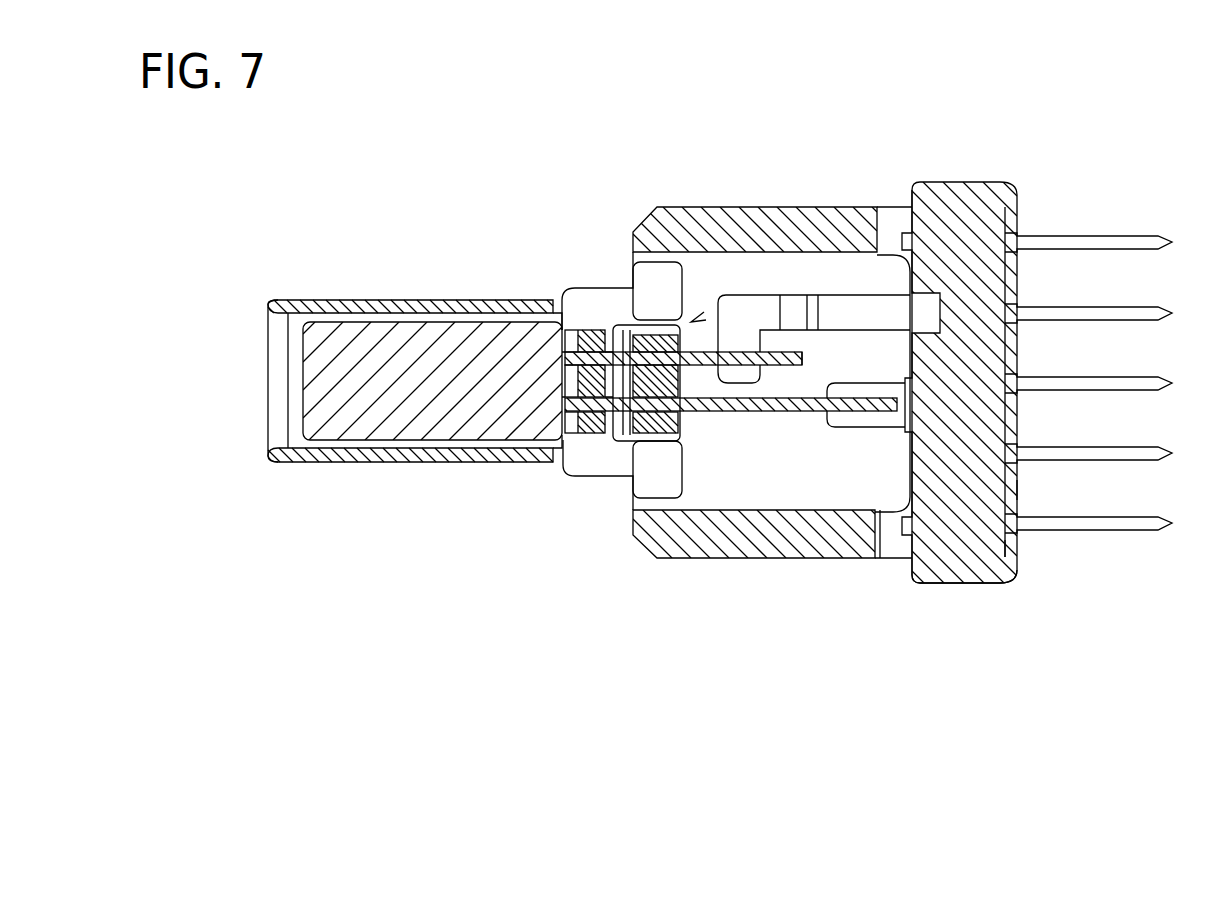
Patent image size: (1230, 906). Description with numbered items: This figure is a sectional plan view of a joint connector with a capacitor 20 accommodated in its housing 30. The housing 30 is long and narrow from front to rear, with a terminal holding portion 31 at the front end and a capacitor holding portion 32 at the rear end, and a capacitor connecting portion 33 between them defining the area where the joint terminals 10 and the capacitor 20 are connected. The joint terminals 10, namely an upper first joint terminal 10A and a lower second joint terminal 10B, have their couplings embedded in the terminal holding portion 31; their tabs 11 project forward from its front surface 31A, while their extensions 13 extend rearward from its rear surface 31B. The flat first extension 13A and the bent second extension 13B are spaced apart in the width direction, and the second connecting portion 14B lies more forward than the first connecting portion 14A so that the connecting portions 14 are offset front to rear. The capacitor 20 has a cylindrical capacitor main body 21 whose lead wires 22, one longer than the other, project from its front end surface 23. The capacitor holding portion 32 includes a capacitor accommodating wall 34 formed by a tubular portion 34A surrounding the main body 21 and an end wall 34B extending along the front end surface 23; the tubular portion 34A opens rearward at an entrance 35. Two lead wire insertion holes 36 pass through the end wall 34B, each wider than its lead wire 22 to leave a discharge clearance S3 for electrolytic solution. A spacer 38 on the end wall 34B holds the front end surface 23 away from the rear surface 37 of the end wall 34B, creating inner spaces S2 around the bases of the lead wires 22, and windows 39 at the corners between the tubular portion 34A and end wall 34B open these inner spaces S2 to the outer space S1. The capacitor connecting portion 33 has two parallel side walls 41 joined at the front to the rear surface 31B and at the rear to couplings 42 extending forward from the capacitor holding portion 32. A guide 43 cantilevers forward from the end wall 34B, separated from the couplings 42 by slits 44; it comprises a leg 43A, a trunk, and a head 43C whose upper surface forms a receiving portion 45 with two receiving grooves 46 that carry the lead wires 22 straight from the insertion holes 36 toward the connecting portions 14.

The joint terminal 10 is at (1050, 100).
The first joint terminal 10A is at (913, 278).
The second joint terminal 10B is at (928, 312).
The tab 11 is at (1142, 452).
The extension 13 is at (920, 642).
The first extension 13A is at (858, 424).
The second extension 13B is at (906, 386).
The connecting portion 14 is at (912, 88).
The first connecting portion 14A is at (850, 392).
The second connecting portion 14B is at (753, 345).
The capacitor 20 is at (340, 335).
The capacitor main body 21 is at (378, 330).
The lead wire 22 is at (840, 410).
The front end surface 23 is at (622, 338).
The housing 30 is at (983, 575).
The terminal holding portion 31 is at (950, 577).
The front surface 31A is at (1018, 488).
The rear surface 31B is at (1018, 548).
The capacitor holding portion 32 is at (430, 305).
The capacitor connecting portion 33 is at (768, 215).
The capacitor accommodating wall 34 is at (482, 136).
The tubular portion 34A is at (560, 320).
The end wall 34B is at (575, 330).
The entrance 35 is at (272, 315).
The lead wire insertion hole 36 is at (568, 372).
The rear surface of the end wall 37 is at (566, 440).
The spacer 38 is at (562, 372).
The window 39 is at (572, 340).
The side wall 41 is at (846, 225).
The coupling 42 is at (676, 318).
The guide 43 is at (672, 430).
The leg 43A is at (640, 335).
The head 43C is at (628, 335).
The slit 44 is at (655, 335).
The receiving portion 45 is at (660, 440).
The receiving groove 46 is at (790, 365).
The outer space S1 is at (694, 320).
The inner space S2 is at (563, 372).
The discharge clearance S3 is at (615, 440).